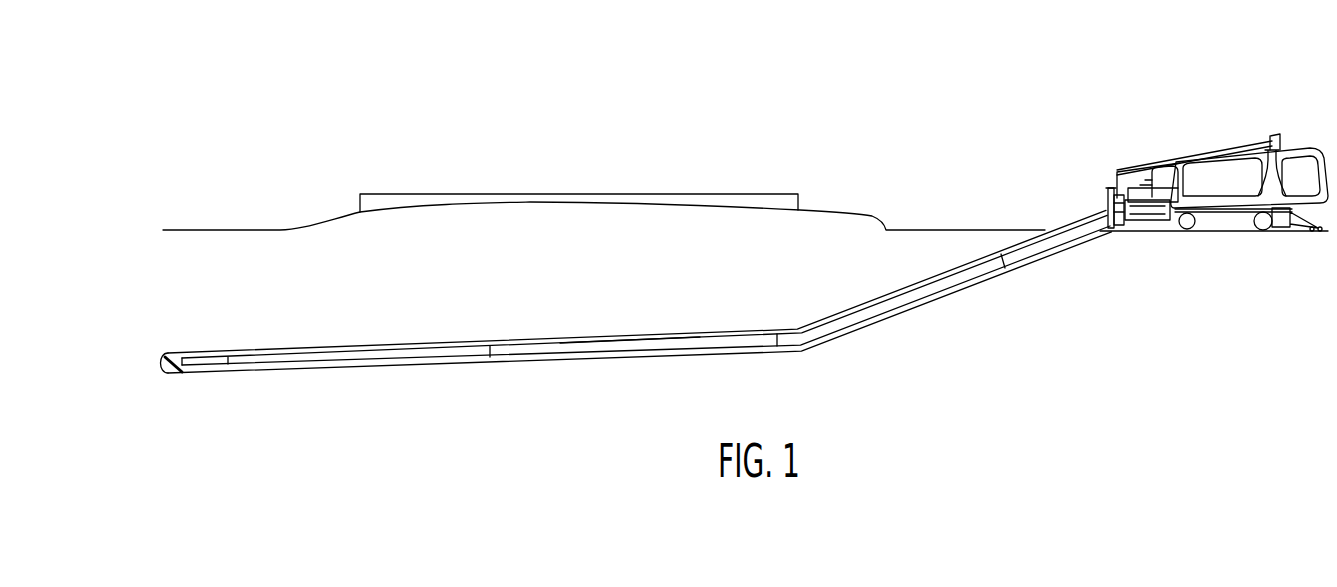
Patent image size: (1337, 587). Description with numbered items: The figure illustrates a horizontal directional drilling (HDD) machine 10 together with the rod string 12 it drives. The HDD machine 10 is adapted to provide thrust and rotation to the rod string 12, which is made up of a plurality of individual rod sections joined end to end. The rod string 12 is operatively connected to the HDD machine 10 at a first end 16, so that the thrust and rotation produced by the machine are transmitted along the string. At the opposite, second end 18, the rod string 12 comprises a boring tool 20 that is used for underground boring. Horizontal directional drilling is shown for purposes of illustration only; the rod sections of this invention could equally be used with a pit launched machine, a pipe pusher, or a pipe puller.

The horizontal directional drilling machine 10 is at (1176, 94).
The rod string 12 is at (235, 372).
The first end 16 is at (1105, 223).
The second end 18 is at (200, 357).
The boring tool 20 is at (180, 373).